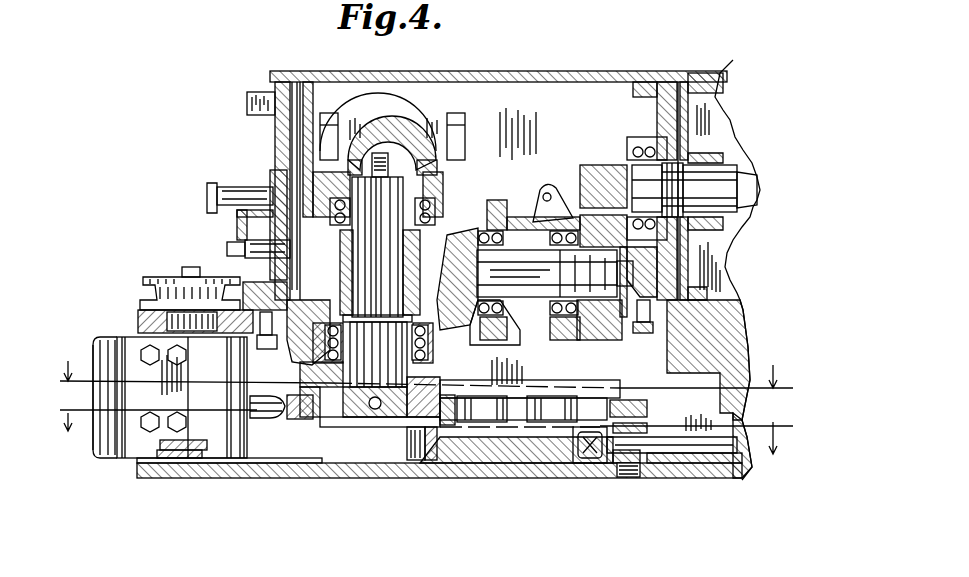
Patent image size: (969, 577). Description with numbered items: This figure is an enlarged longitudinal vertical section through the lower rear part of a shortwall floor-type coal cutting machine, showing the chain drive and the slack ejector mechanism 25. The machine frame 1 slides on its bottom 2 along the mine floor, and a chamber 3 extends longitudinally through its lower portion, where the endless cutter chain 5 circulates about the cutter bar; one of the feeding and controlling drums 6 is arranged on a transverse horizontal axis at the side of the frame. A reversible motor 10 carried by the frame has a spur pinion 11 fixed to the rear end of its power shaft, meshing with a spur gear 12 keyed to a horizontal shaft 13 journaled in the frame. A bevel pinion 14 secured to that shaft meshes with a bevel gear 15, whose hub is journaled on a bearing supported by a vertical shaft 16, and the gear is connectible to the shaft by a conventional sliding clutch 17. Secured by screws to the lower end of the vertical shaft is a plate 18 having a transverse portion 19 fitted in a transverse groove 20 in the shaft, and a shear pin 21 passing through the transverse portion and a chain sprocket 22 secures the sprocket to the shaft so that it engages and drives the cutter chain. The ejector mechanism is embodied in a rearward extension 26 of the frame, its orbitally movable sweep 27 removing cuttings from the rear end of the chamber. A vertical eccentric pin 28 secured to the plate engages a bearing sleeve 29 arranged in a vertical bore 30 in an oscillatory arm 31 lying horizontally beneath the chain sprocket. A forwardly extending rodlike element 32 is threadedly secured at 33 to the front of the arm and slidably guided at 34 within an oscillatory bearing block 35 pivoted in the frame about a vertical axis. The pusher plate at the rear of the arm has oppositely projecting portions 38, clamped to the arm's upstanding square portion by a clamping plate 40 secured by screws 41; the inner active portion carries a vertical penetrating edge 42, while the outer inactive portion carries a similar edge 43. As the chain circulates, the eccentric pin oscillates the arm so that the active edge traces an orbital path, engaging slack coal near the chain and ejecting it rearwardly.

The machine frame 1 is at (596, 72).
The bottom 2 is at (710, 479).
The chamber 3 is at (489, 426).
The endless cutter chain 5 is at (242, 485).
The drum 6 is at (426, 443).
The reversible motor 10 is at (723, 75).
The spur pinion 11 is at (600, 170).
The spur gear 12 is at (640, 335).
The horizontal shaft 13 is at (510, 270).
The bevel pinion 14 is at (472, 232).
The bevel gear 15 is at (270, 300).
The vertical shaft 16 is at (370, 272).
The sliding clutch 17 is at (430, 236).
The plate 18 is at (385, 418).
The transverse portion 19 is at (414, 397).
The transverse groove 20 is at (330, 388).
The shear pin 21 is at (372, 410).
The chain sprocket 22 is at (450, 425).
The slack ejector mechanism 25 is at (118, 328).
The rearward extension 26 is at (174, 463).
The orbitally movable sweep 27 is at (115, 447).
The eccentric pin 28 is at (423, 462).
The bearing sleeve 29 is at (438, 462).
The vertical bore 30 is at (400, 420).
The oscillatory arm 31 is at (525, 462).
The rodlike element 32 is at (697, 453).
The threaded connection 33 is at (578, 453).
The sliding guide 34 is at (650, 463).
The oscillatory bearing block 35 is at (613, 463).
The oppositely projecting portions 38 is at (108, 352).
The clamping plate 40 is at (165, 438).
The screws 41 is at (153, 418).
The penetrating edge 42 is at (273, 413).
The penetrating edge 43 is at (93, 452).